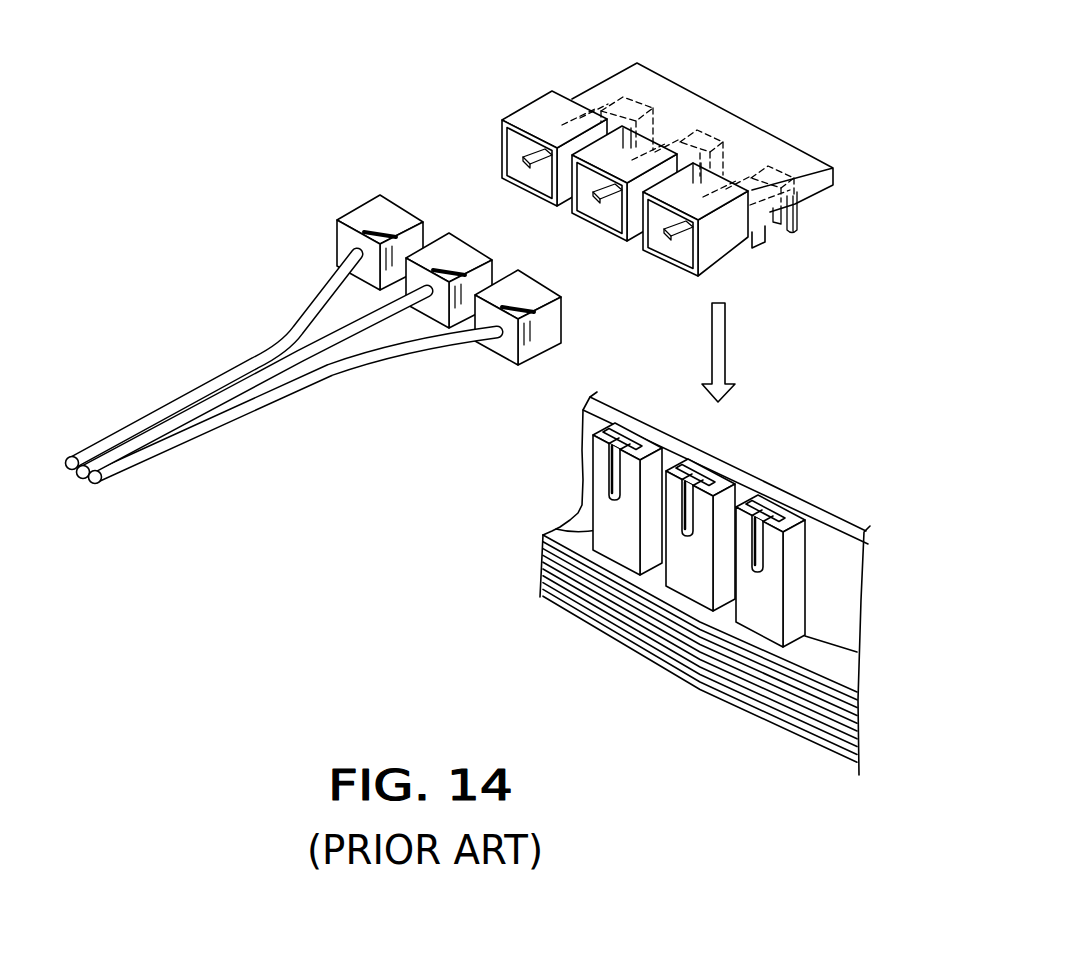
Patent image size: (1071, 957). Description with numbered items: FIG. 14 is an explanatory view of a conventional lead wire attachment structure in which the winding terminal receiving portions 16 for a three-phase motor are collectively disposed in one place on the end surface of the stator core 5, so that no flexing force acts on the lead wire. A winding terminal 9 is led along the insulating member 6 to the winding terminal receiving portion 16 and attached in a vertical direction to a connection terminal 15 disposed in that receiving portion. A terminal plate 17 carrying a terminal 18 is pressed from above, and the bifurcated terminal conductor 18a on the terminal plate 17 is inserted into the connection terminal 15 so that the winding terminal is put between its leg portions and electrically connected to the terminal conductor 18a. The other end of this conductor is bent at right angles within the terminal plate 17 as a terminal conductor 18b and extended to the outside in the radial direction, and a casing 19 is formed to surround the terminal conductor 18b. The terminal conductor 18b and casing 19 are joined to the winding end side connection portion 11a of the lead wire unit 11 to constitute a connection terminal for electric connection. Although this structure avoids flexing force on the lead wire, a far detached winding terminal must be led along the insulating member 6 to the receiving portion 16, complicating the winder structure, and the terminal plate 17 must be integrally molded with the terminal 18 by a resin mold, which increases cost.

The stator core 5 is at (632, 630).
The insulating member 6 is at (838, 599).
The winding terminal 9 is at (620, 491).
The lead wire unit 11 is at (200, 390).
The winding end side connection portion 11a is at (362, 215).
The connection terminal 15 is at (641, 430).
The winding terminal receiving portion 16 is at (560, 526).
The terminal plate 17 is at (702, 107).
The terminal 18 is at (780, 172).
The terminal conductor 18a is at (781, 235).
The terminal conductor 18b is at (670, 244).
The casing 19 is at (537, 100).